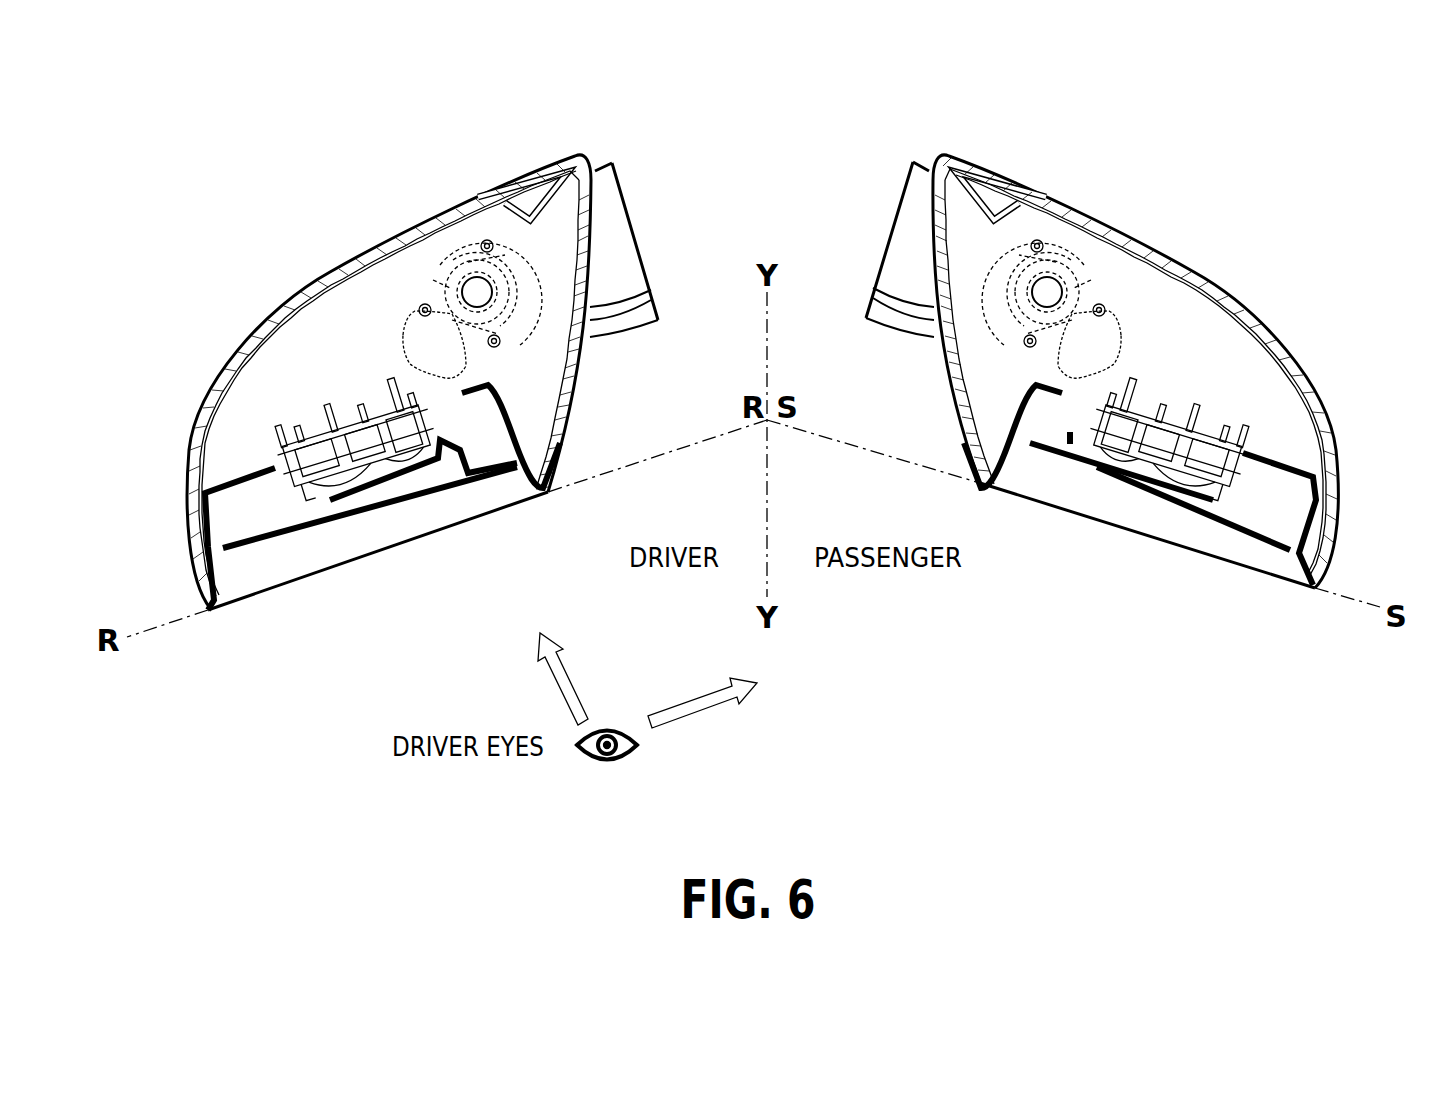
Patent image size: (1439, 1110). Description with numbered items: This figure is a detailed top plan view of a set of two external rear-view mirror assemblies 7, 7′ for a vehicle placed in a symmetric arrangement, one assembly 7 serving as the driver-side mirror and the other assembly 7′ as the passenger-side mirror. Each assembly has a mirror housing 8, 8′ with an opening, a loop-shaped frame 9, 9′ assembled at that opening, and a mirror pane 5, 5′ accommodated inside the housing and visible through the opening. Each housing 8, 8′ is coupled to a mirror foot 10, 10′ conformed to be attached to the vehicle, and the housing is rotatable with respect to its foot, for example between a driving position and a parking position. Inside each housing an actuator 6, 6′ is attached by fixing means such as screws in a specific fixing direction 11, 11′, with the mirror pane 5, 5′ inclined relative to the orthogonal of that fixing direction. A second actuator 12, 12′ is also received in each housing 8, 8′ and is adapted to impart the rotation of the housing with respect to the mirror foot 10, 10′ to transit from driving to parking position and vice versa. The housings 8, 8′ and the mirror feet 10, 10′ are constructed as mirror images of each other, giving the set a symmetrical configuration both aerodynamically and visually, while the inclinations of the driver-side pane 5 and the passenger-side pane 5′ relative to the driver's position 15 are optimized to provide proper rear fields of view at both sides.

The external rear-view mirror assembly 7 is at (280, 196).
The mirror housing 8 is at (292, 302).
The mirror foot 10 is at (620, 222).
The second actuator 12 is at (476, 277).
The fixing direction 11 is at (340, 423).
The actuator 6 is at (320, 460).
The frame 9 is at (203, 508).
The mirror pane 5 is at (262, 545).
The external rear-view mirror assembly 7′ is at (1224, 196).
The mirror housing 8′ is at (1252, 315).
The mirror foot 10′ is at (913, 202).
The second actuator 12′ is at (1040, 277).
The fixing direction 11′ is at (1170, 423).
The actuator 6′ is at (1195, 448).
The frame 9′ is at (1315, 522).
The mirror pane 5′ is at (1253, 537).
The driver's position 15 is at (592, 770).